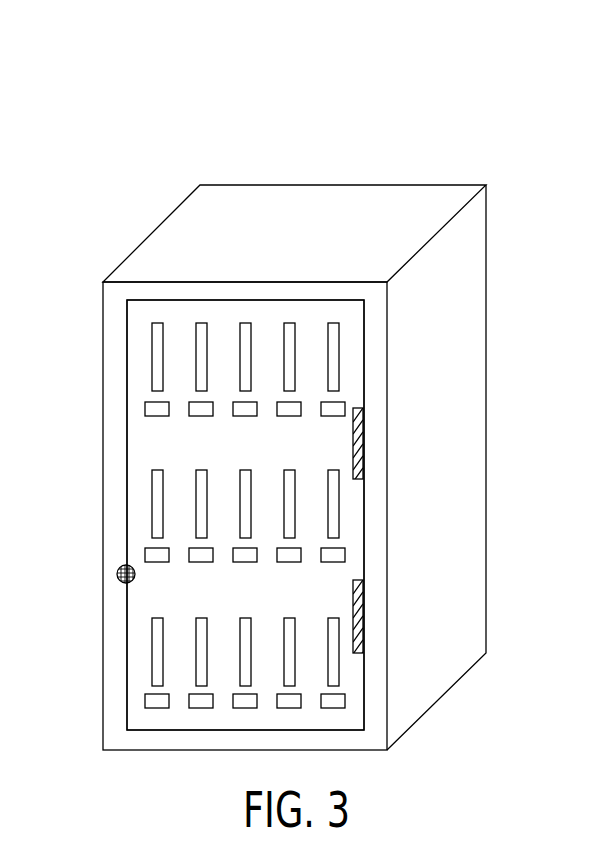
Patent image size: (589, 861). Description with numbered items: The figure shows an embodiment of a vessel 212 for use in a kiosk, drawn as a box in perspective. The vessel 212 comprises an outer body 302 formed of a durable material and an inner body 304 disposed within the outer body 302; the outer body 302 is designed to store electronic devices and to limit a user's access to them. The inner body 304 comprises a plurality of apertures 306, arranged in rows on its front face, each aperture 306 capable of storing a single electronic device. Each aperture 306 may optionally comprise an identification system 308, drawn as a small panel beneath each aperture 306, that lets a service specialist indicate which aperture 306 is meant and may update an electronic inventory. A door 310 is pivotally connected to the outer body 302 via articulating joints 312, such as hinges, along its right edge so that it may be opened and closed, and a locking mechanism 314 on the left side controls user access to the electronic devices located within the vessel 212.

The vessel 212 is at (294, 388).
The outer body 302 is at (416, 196).
The inner body 304 is at (138, 442).
The aperture 306 is at (341, 355).
The identification system 308 is at (332, 408).
The door 310 is at (142, 282).
The articulating joint 312 is at (380, 443).
The locking mechanism 314 is at (100, 573).